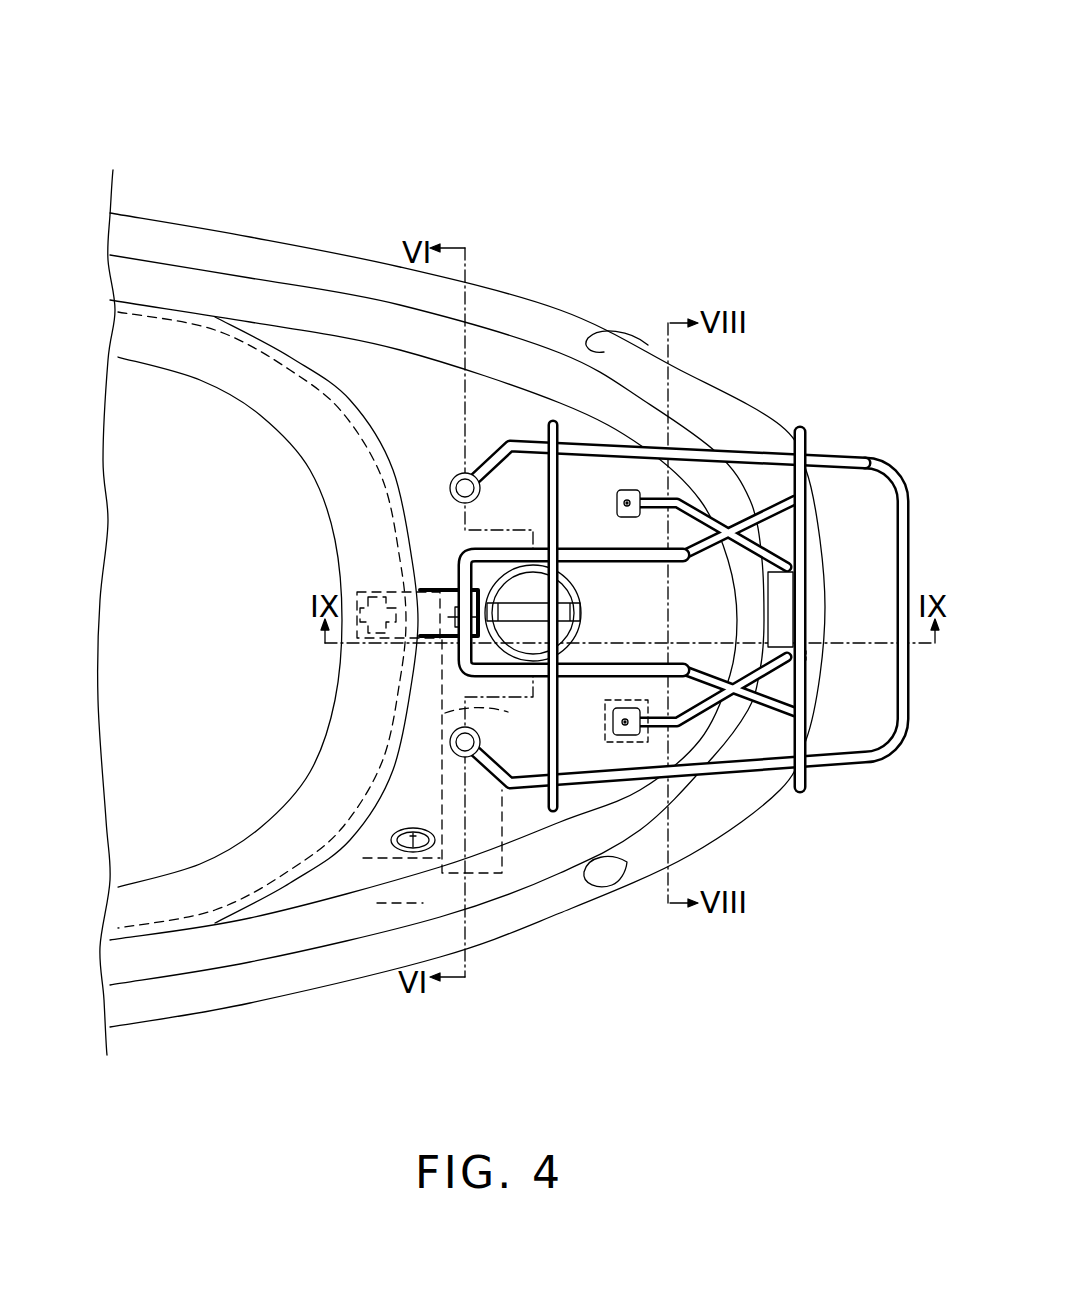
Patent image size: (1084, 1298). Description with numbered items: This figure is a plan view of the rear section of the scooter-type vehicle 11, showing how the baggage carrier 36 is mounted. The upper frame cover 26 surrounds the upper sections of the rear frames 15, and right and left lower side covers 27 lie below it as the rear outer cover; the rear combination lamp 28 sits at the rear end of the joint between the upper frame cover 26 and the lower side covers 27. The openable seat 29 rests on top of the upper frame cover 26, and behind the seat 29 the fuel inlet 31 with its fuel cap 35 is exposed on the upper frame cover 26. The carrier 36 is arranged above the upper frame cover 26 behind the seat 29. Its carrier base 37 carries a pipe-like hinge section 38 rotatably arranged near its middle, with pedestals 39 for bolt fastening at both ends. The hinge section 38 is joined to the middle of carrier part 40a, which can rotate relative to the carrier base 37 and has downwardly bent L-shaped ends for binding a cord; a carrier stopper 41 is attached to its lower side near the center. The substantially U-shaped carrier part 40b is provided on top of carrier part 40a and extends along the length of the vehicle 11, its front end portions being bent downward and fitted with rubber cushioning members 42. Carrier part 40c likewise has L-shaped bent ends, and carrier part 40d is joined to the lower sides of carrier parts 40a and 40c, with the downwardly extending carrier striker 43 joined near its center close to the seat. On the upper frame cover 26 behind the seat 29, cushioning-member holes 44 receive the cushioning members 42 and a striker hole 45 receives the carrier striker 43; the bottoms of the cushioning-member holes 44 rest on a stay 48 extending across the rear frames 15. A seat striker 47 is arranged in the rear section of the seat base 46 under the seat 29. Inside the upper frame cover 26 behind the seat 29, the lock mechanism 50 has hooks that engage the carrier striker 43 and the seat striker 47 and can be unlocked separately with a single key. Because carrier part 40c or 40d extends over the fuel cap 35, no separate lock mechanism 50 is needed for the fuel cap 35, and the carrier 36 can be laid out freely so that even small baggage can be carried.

The scooter-type vehicle 11 is at (480, 118).
The rear frames 15 is at (583, 820).
The upper frame cover 26 is at (490, 397).
The lower side covers 27 is at (530, 910).
The rear combination lamp 28 is at (707, 823).
The seat 29 is at (165, 417).
The fuel inlet 31 is at (577, 582).
The fuel cap 35 is at (570, 626).
The carrier 36 is at (851, 431).
The carrier base 37 is at (765, 673).
The hinge section 38 is at (782, 611).
The pedestals 39 is at (625, 491).
The carrier part 40a is at (800, 566).
The carrier part 40b is at (742, 453).
The carrier part 40c is at (551, 481).
The carrier part 40d is at (623, 555).
The carrier stopper 41 is at (800, 654).
The cushioning members 42 is at (452, 478).
The carrier striker 43 is at (460, 580).
The cushioning-member holes 44 is at (455, 482).
The striker hole 45 is at (437, 585).
The seat base 46 is at (275, 377).
The seat striker 47 is at (373, 600).
The stay 48 is at (480, 860).
The lock mechanism 50 is at (406, 778).